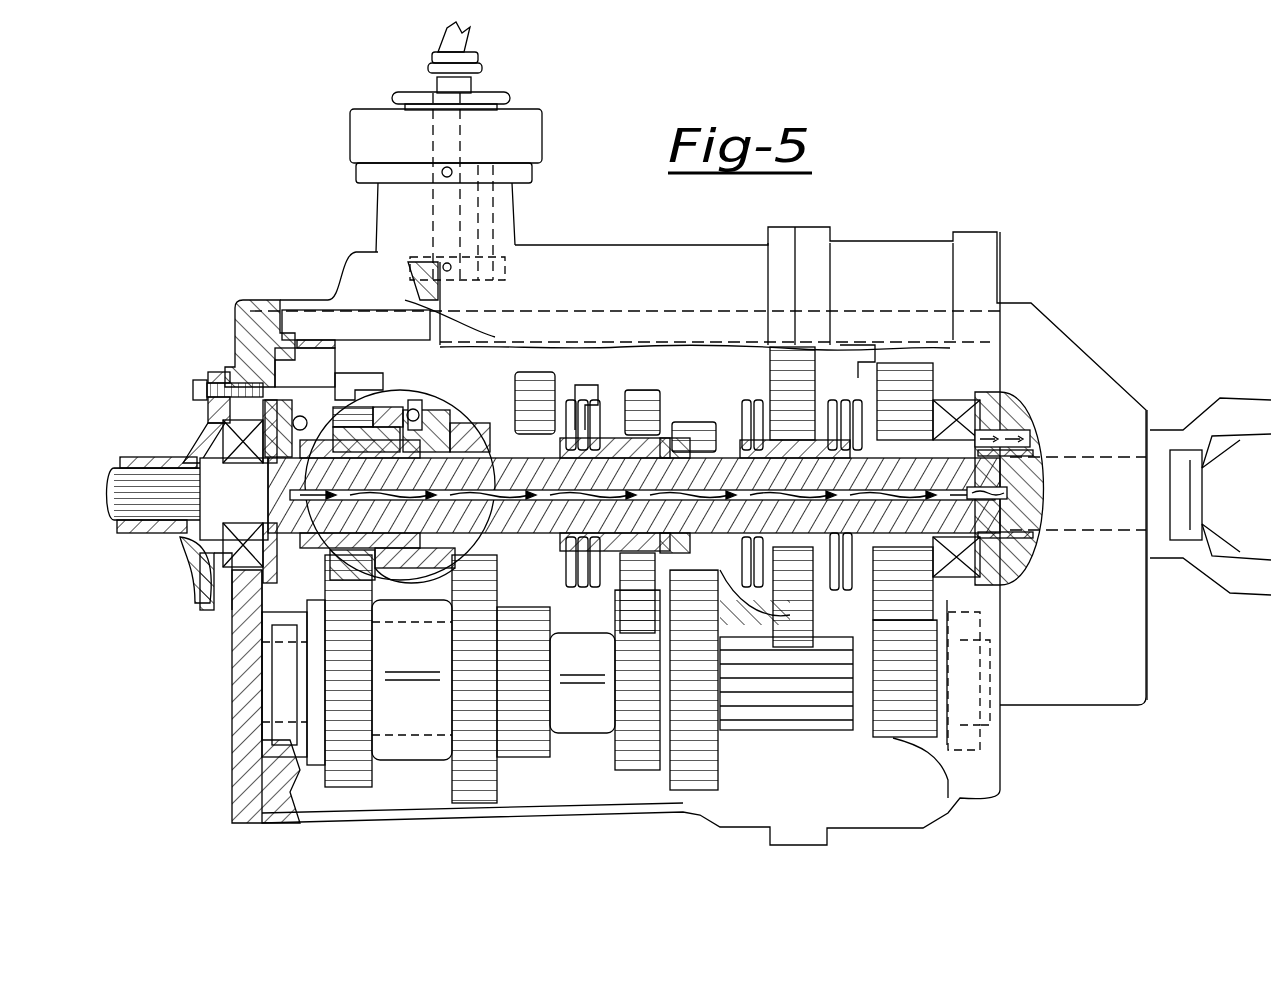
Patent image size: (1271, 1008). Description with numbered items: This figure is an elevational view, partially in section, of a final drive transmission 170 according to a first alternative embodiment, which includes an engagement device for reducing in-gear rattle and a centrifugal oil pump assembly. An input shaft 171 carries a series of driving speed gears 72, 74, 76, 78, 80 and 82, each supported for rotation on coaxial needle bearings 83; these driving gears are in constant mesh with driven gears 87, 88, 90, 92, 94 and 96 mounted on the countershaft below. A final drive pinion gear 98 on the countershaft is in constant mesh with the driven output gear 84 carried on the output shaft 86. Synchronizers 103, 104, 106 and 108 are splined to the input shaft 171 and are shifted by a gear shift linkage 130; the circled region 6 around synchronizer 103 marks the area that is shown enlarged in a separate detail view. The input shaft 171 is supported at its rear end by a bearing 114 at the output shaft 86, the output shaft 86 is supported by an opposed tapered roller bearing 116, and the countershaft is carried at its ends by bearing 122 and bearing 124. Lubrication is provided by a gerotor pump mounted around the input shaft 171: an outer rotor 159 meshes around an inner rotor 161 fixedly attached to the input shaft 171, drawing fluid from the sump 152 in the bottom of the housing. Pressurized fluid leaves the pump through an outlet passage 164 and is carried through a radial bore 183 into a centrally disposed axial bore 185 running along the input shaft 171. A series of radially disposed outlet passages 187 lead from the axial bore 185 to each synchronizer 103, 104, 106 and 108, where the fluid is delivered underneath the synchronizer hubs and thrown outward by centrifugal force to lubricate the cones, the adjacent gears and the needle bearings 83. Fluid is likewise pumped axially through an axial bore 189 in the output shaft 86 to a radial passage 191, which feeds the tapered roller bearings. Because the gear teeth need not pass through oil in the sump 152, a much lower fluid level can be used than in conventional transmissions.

The detail area of FIG. 6 is at (400, 472).
The driving speed gear 72 is at (703, 573).
The driving speed gear 74 is at (450, 425).
The driving speed gear 76 is at (360, 400).
The driving speed gear 78 is at (645, 390).
The driving speed gear 80 is at (535, 375).
The driving speed gear 82 is at (810, 345).
The needle bearings 83 is at (435, 462).
The driven output gear 84 is at (928, 350).
The output shaft 86 is at (1077, 530).
The driven gear 87 is at (678, 800).
The driven gear 88 is at (450, 793).
The driven gear 90 is at (358, 785).
The driven gear 92 is at (624, 762).
The driven gear 94 is at (500, 762).
The driven gear 96 is at (795, 715).
The final drive pinion gear 98 is at (905, 740).
The synchronizer 103 is at (432, 400).
The synchronizer 104 is at (595, 388).
The synchronizer 106 is at (755, 358).
The synchronizer 108 is at (860, 348).
The bearing 114 is at (880, 575).
The tapered roller bearing 116 is at (1003, 422).
The bearing 122 is at (285, 740).
The bearing 124 is at (978, 740).
The gear shift linkage 130 is at (428, 330).
The sump 152 is at (300, 790).
The outer rotor 159 is at (213, 565).
The inner rotor 161 is at (232, 598).
The outlet passage 164 is at (205, 432).
The transmission 170 is at (1078, 248).
The input shaft 171 is at (185, 540).
The radial bore 183 is at (268, 560).
The axial bore 185 is at (640, 548).
The outlet passages 187 is at (740, 452).
The axial bore 189 is at (1038, 530).
The radial passage 191 is at (1040, 452).